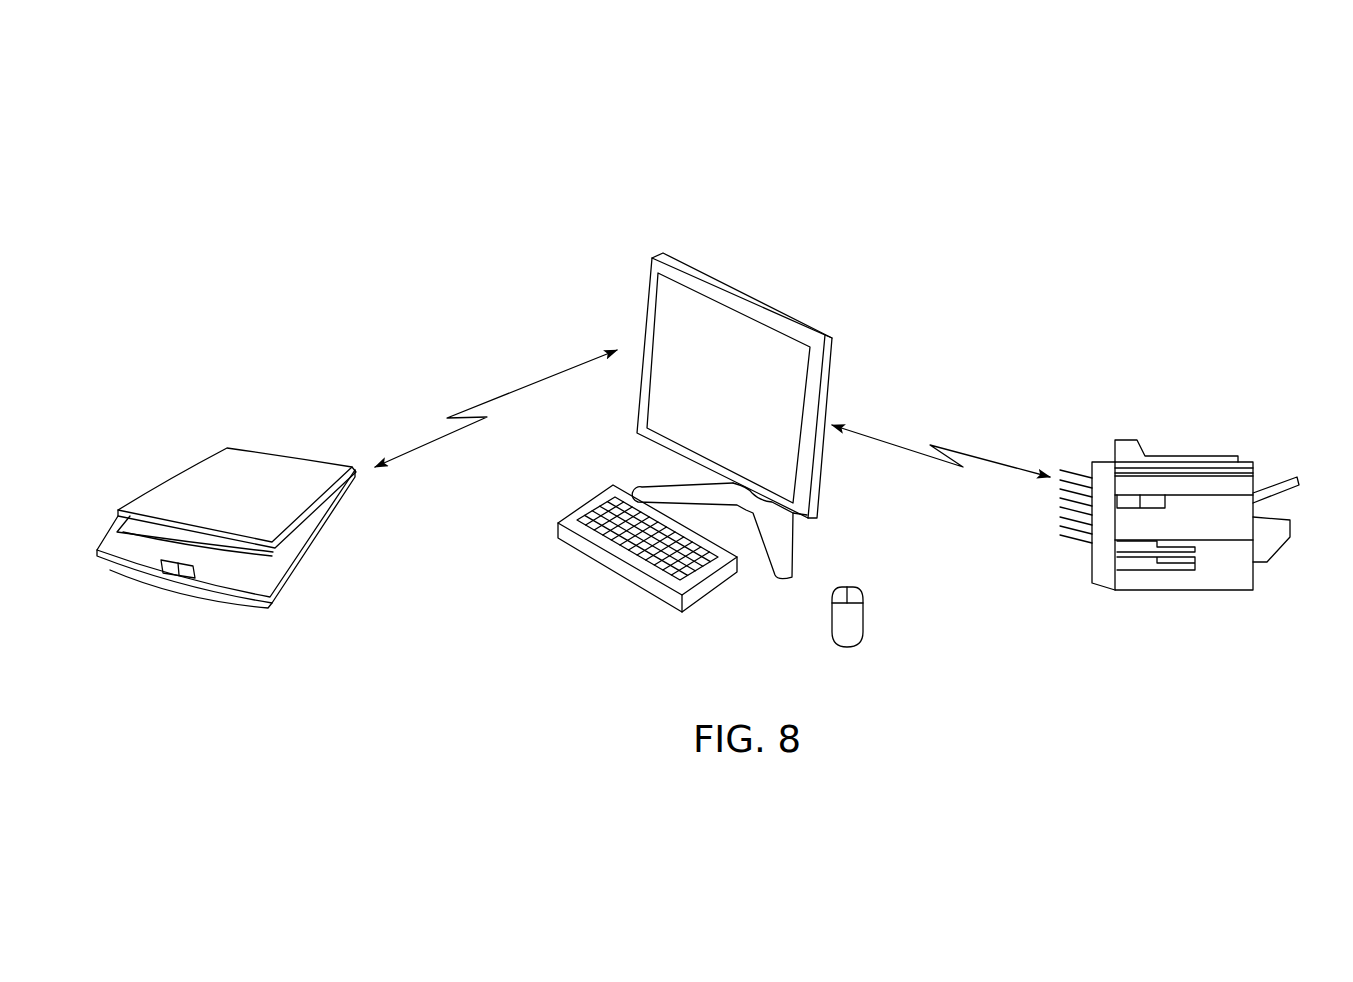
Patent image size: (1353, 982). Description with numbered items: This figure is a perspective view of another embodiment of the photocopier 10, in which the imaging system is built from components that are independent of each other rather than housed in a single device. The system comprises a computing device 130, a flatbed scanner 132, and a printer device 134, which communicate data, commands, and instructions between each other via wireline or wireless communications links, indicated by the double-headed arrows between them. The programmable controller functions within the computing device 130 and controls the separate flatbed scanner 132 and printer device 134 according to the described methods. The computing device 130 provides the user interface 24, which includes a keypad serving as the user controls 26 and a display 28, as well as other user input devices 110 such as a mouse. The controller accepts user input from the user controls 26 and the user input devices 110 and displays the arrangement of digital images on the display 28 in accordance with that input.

The photocopier 10 is at (845, 296).
The user interface 24 is at (722, 617).
The user controls 26 is at (645, 580).
The touch-sensitive display 28 is at (750, 328).
The user input devices 110 is at (855, 620).
The computing device 130 is at (698, 380).
The flatbed scanner 132 is at (226, 473).
The printer device 134 is at (1179, 464).